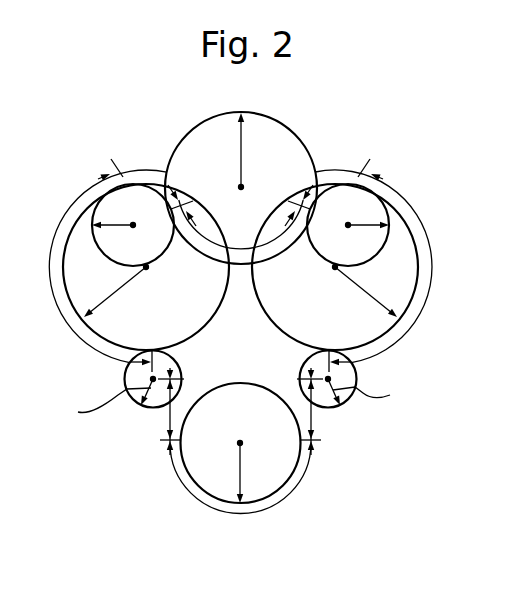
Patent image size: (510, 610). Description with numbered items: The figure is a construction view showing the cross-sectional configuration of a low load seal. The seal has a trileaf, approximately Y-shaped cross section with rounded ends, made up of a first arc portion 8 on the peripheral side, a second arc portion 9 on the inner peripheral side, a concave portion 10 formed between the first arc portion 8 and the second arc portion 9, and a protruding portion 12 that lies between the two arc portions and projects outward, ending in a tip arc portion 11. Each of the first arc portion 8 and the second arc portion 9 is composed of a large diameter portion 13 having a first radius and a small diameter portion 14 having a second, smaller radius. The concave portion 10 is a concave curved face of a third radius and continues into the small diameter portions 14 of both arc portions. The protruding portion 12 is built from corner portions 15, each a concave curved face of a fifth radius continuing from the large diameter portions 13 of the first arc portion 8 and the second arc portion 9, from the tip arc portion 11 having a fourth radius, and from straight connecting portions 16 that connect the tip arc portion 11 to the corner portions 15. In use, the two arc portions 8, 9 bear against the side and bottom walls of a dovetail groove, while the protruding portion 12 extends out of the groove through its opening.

The first arc portion 8 is at (118, 106).
The second arc portion 9 is at (445, 106).
The concave portion 10 is at (239, 247).
The tip arc portion 11 is at (240, 515).
The protruding portion 12 is at (313, 481).
The large diameter portion 13 is at (76, 204).
The small diameter portion 14 is at (126, 170).
The corner portion 15 is at (156, 364).
The straight connecting portion 16 is at (167, 409).